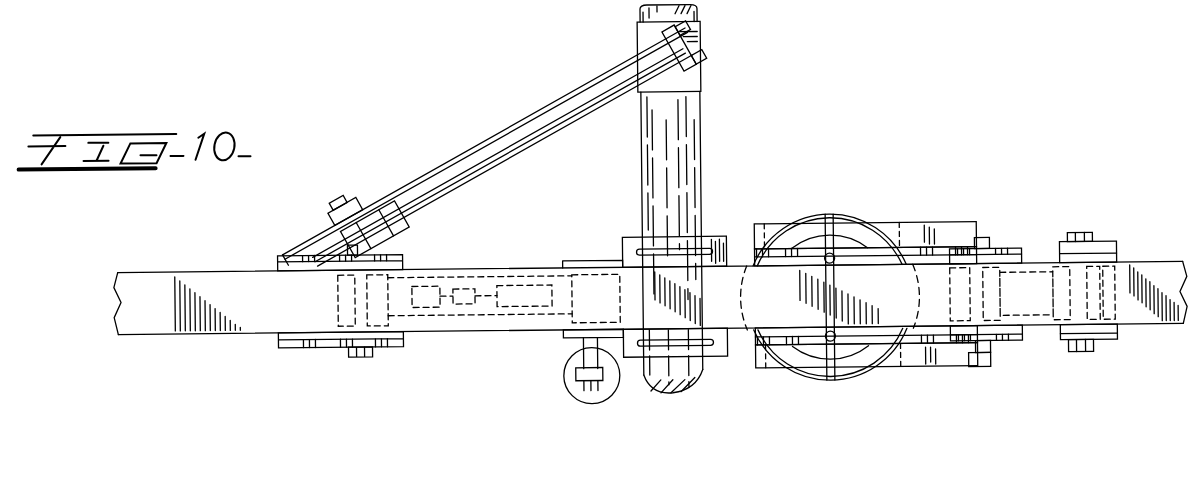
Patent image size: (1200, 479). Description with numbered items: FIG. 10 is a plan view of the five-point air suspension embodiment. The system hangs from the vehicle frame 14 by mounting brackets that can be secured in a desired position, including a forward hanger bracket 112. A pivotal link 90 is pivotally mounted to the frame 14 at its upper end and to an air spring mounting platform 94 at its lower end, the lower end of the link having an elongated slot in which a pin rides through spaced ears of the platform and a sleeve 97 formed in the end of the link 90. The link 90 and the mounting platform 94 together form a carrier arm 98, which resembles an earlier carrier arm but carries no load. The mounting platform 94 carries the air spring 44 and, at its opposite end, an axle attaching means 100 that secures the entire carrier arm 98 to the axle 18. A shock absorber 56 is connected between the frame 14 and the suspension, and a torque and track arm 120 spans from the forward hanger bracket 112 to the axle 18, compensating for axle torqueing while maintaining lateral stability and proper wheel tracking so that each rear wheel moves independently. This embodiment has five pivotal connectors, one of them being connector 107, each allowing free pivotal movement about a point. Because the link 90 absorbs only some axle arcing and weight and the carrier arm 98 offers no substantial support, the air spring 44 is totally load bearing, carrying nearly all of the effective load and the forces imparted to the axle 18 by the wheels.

The frame 14 is at (203, 270).
The axle 18 is at (693, 130).
The air spring 44 is at (842, 221).
The shock absorber 56 is at (565, 378).
The pivotal link 90 is at (1022, 283).
The air spring mounting platform 94 is at (1044, 3).
The sleeve 97 is at (1093, 283).
The carrier arm 98 is at (931, 4).
The axle attaching means 100 is at (727, 232).
The pivotal connector 107 is at (700, 3).
The forward hanger bracket 112 is at (287, 341).
The torque and track arm 120 is at (560, 115).